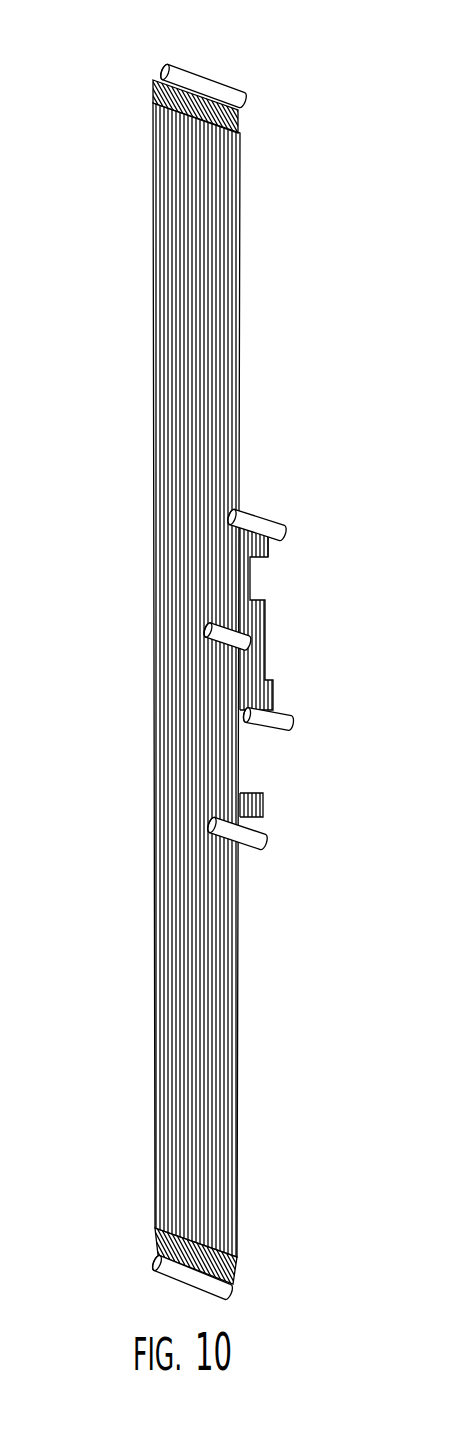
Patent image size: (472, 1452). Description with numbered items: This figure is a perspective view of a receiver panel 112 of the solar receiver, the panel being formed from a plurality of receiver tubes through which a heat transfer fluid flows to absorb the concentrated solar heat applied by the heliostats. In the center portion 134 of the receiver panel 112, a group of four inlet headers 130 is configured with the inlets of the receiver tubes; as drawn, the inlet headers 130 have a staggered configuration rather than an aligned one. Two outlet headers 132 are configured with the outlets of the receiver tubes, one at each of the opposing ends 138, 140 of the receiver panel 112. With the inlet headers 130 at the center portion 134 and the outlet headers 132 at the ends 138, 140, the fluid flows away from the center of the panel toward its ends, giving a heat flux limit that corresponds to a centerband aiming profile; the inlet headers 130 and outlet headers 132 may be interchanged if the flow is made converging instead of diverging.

The receiver panel 112 is at (279, 285).
The inlet header 130 is at (270, 628).
The outlet header 132 is at (190, 78).
The center portion 134 is at (138, 493).
The end of the receiver panel 138 is at (292, 107).
The end of the receiver panel 140 is at (265, 1250).